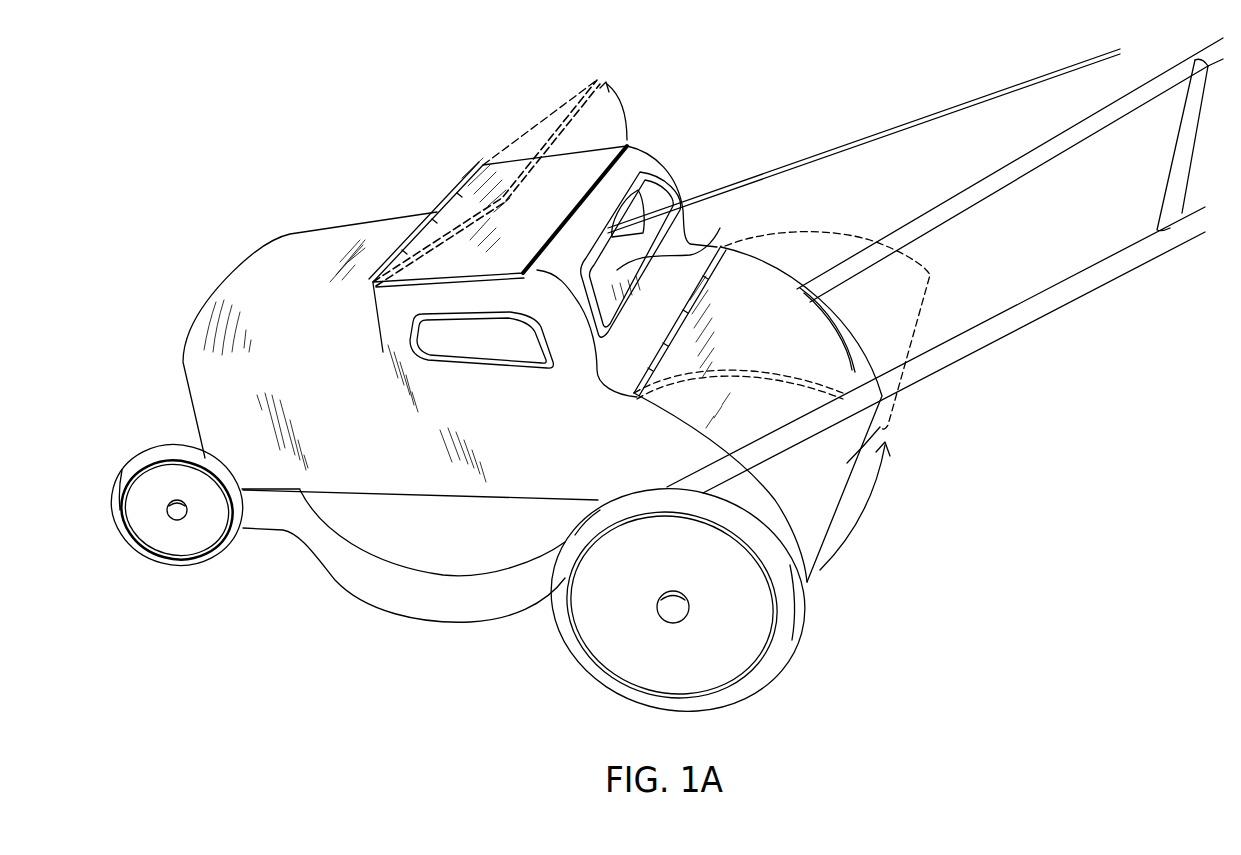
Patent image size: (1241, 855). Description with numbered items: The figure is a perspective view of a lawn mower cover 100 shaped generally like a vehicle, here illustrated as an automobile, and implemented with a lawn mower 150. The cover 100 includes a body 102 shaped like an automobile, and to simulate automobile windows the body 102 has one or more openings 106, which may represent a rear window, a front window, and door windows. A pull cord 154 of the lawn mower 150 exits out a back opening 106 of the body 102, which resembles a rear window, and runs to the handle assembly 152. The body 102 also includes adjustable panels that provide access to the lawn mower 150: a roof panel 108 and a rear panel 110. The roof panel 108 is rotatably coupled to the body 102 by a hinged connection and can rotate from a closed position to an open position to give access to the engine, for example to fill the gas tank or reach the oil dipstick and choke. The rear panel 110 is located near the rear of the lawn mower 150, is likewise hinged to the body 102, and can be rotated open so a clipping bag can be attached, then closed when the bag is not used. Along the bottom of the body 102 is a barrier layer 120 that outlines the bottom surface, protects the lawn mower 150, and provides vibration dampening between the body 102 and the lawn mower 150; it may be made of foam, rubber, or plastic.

The lawn mower cover 100 is at (660, 384).
The body 102 is at (390, 329).
The openings 106 is at (680, 185).
The roof panel 108 is at (522, 205).
The rear panel 110 is at (743, 417).
The barrier layer 120 is at (367, 494).
The lawn mower 150 is at (480, 539).
The handle assembly 152 is at (950, 363).
The pull cord 154 is at (865, 138).